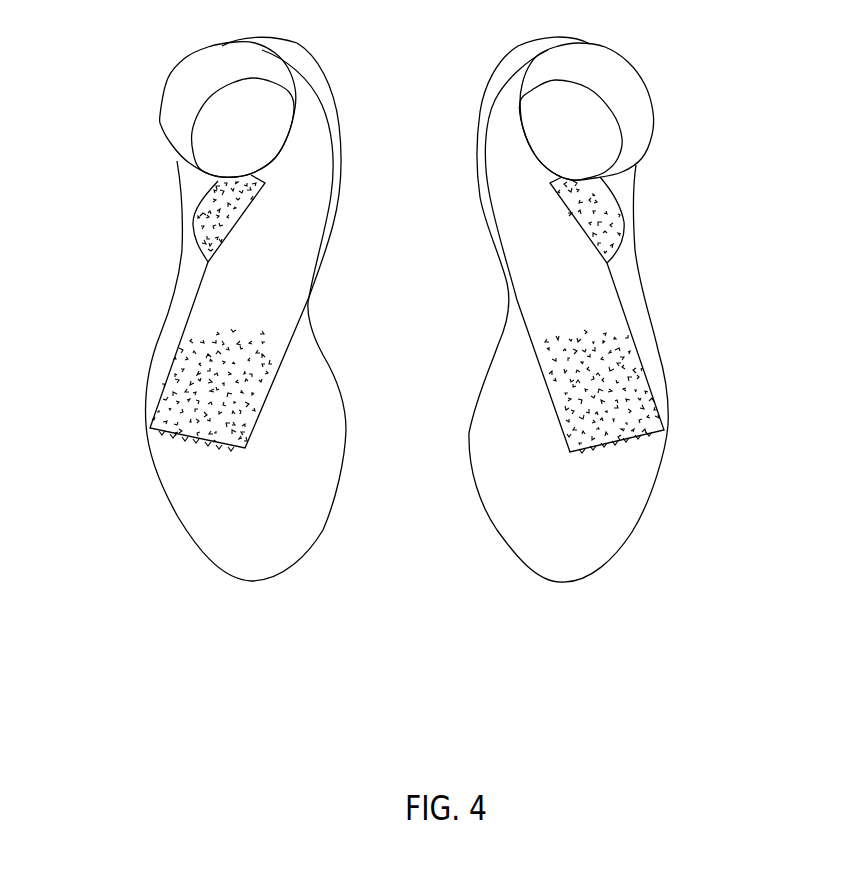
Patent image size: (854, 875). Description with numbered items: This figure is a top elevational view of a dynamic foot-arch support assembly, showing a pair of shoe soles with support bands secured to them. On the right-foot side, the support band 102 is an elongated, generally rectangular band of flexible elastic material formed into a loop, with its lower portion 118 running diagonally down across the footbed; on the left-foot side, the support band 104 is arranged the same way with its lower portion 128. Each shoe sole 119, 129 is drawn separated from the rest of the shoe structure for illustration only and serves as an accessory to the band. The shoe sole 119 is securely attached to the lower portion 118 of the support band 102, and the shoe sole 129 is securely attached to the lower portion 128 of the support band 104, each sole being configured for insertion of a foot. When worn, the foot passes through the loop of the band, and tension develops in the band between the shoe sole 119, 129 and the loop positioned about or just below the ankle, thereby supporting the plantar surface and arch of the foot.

The support band 102 is at (200, 345).
The support band 104 is at (619, 345).
The lower portion 118 is at (177, 406).
The shoe sole 119 is at (258, 552).
The lower portion 128 is at (645, 407).
The shoe sole 129 is at (560, 538).